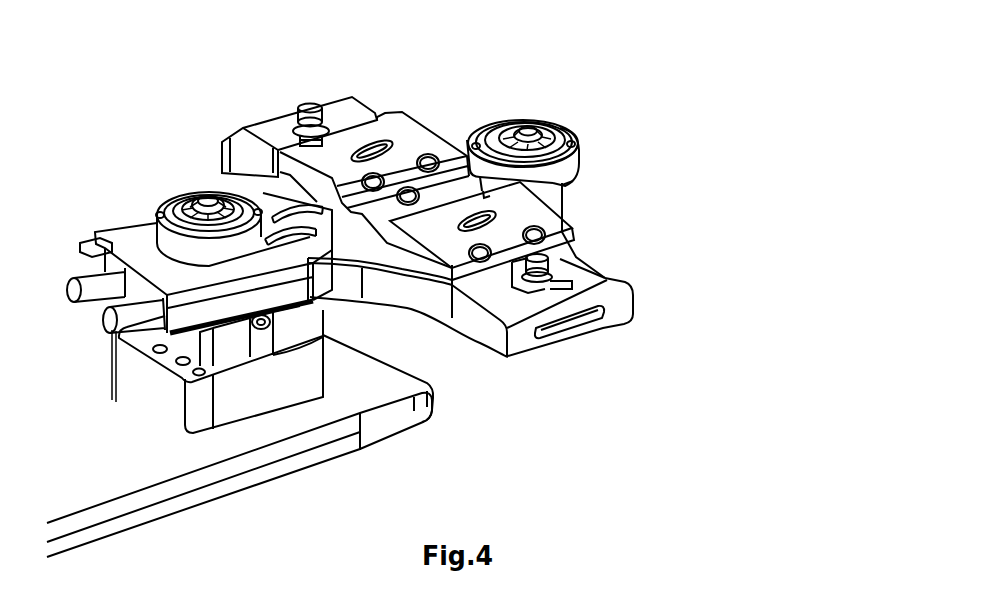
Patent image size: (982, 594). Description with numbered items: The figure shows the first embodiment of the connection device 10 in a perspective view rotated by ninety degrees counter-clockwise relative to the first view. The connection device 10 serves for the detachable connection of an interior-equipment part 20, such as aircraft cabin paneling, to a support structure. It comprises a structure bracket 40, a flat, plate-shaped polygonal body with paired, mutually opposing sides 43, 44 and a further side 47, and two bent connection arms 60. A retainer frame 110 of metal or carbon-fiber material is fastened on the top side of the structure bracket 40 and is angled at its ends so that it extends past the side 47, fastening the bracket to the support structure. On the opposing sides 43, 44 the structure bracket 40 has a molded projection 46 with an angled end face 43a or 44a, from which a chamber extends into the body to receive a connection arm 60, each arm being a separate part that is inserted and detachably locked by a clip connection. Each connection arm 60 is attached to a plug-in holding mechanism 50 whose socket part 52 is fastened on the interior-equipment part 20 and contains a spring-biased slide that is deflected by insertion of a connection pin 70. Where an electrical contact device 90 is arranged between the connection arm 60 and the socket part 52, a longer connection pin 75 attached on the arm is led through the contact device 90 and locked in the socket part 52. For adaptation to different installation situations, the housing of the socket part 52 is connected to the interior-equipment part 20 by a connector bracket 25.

The connection device 10 is at (325, 97).
The interior-equipment part 20 is at (177, 487).
The connector bracket 25 is at (240, 400).
The structure bracket 40 is at (577, 198).
The side 43 is at (632, 297).
The end face 43a is at (575, 134).
The side 44 is at (477, 328).
The end face 44a is at (229, 146).
The molded projection 46 is at (568, 183).
The side 47 is at (593, 322).
The plug-in holding mechanism 50 is at (173, 363).
The socket part 52 is at (267, 345).
The bent connection arm 60 is at (150, 230).
The connection pin 70 is at (517, 130).
The connection pin 75 is at (200, 191).
The electrical contact device 90 is at (73, 280).
The retainer frame 110 is at (407, 130).